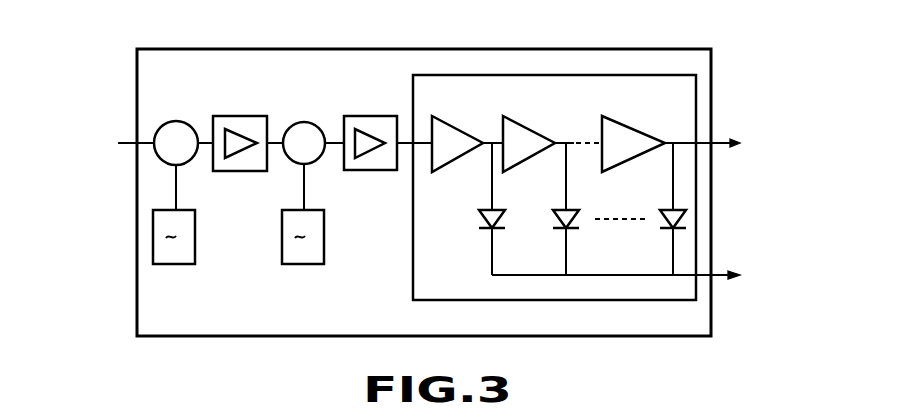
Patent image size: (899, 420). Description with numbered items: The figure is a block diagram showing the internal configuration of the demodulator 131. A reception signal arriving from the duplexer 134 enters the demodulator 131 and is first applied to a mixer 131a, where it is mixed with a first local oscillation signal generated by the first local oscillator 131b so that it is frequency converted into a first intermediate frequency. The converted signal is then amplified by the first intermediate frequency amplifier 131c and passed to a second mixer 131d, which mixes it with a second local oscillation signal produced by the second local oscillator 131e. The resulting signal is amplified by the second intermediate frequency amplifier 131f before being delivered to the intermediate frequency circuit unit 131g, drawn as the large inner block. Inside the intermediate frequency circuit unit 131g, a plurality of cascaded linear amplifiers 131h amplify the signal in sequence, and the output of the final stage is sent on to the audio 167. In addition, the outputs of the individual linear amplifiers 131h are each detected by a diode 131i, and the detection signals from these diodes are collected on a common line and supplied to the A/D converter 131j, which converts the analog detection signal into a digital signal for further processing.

The demodulator 131 is at (245, 49).
The mixer 131a is at (176, 121).
The first local oscillator 131b is at (177, 264).
The first intermediate frequency amplifier 131c is at (236, 116).
The mixer 131d is at (305, 122).
The second local oscillator 131e is at (305, 264).
The second intermediate frequency amplifier 131f is at (366, 116).
The intermediate frequency circuit unit 131g is at (507, 75).
The linear amplifiers 131h is at (462, 108).
The diode 131i is at (662, 216).
The A/D converter 131j is at (804, 277).
The duplexer 134 is at (81, 142).
The audio 167 is at (795, 148).